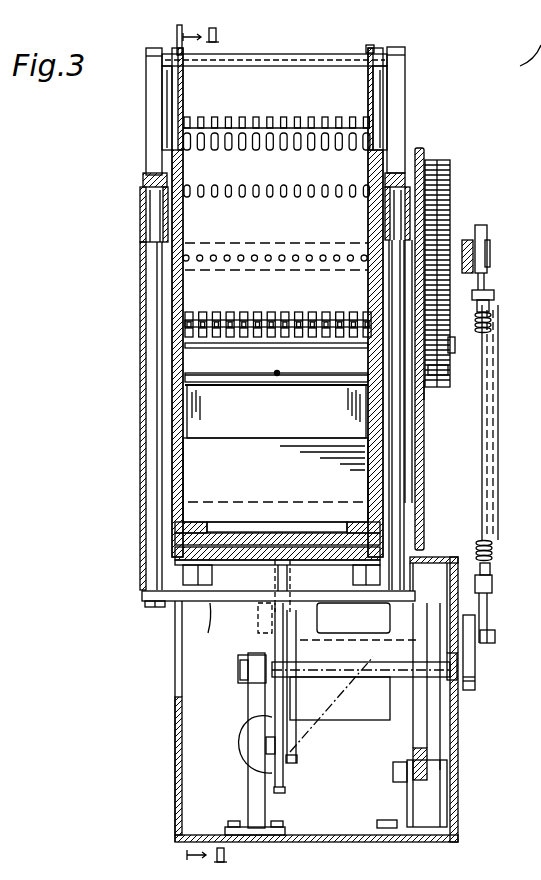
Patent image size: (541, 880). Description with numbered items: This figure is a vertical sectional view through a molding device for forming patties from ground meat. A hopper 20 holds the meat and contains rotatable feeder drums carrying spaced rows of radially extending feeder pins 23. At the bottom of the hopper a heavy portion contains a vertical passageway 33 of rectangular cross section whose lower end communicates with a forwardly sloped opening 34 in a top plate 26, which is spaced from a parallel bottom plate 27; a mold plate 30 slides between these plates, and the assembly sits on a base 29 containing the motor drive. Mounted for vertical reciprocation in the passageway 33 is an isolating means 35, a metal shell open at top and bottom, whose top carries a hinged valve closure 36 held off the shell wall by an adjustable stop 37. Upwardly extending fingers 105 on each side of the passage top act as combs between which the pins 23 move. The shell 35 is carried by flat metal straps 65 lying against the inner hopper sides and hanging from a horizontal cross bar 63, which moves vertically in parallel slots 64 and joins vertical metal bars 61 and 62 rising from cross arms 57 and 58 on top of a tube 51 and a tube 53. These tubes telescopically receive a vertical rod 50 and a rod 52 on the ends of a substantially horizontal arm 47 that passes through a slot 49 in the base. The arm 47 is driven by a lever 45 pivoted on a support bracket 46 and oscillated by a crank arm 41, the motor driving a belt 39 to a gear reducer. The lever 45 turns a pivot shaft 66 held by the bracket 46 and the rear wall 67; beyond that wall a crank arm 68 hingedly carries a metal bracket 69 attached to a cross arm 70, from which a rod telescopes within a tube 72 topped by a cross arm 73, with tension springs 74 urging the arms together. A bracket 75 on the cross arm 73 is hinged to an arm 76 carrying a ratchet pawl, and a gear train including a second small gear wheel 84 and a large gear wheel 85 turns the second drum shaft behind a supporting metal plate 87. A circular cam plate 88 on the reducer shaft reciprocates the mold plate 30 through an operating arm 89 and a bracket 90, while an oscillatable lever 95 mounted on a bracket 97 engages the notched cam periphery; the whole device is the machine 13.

The machine 13 is at (533, 757).
The hopper 20 is at (172, 160).
The feeder pins 23 is at (300, 118).
The top plate 26 is at (176, 525).
The bottom plate 27 is at (176, 550).
The base 29 is at (470, 759).
The mold plate 30 is at (176, 535).
The vertical passageway 33 is at (182, 482).
The forwardly sloped opening 34 is at (230, 525).
The isolating means 35 is at (296, 417).
The hinged valve closure 36 is at (276, 367).
The adjustable stop 37 is at (290, 364).
The belt 39 is at (273, 745).
The crank arm 41 is at (292, 752).
The lever 45 is at (284, 790).
The support bracket 46 is at (255, 790).
The arm 47 is at (210, 636).
The slot 49 is at (175, 660).
The vertical rod 50 is at (150, 590).
The tube 51 is at (145, 395).
The rod 52 is at (398, 528).
The tube 53 is at (413, 438).
The cross arm 57 is at (160, 181).
The cross arm 58 is at (418, 158).
The metal bar 61 is at (155, 112).
The metal bar 62 is at (395, 108).
The horizontal cross bar 63 is at (270, 55).
The vertical parallel slots 64 is at (173, 87).
The flat metal straps 65 is at (181, 107).
The pivot shaft 66 is at (350, 722).
The rear wall 67 is at (457, 745).
The crank arm 68 is at (476, 655).
The metal bracket 69 is at (488, 605).
The cross arm 70 is at (490, 585).
The tube 72 is at (489, 478).
The cross arm 73 is at (490, 292).
The tension springs 74 is at (488, 318).
The bracket 75 is at (488, 228).
The arm 76 is at (467, 240).
The second small gear wheel 84 is at (440, 372).
The large gear wheel 85 is at (440, 200).
The supporting metal plate 87 is at (424, 393).
The circular cam plate 88 is at (423, 595).
The operating arm 89 is at (434, 712).
The bracket 90 is at (290, 578).
The oscillatable lever 95 is at (422, 790).
The bracket 97 is at (440, 800).
The fingers 105 is at (300, 312).